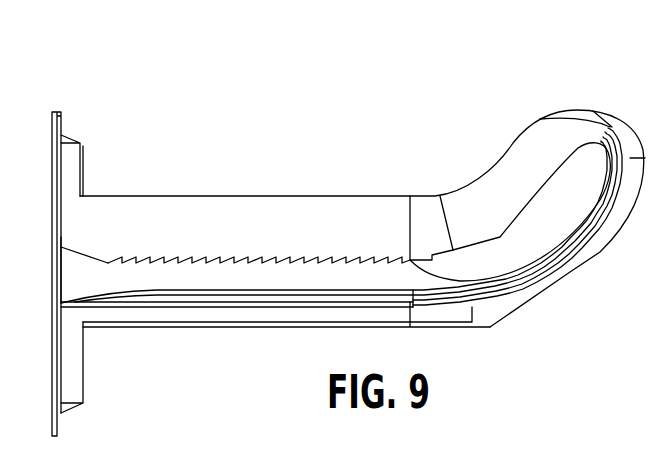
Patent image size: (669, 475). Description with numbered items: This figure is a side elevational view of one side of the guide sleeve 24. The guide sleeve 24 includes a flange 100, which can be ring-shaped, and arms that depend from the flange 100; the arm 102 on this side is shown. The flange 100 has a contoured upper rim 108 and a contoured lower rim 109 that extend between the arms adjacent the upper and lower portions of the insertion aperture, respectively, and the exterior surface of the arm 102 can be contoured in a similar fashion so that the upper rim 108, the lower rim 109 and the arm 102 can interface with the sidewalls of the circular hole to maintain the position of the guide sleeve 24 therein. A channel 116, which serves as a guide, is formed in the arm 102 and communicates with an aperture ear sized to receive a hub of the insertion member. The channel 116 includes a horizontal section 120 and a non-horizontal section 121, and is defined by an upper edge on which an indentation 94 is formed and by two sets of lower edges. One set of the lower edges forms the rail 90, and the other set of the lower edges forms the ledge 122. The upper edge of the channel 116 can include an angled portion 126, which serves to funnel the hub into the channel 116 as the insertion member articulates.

The flange 100 is at (52, 117).
The contoured upper rim 108 is at (72, 167).
The contoured lower rim 109 is at (73, 365).
The guide sleeve 24 is at (250, 168).
The rail 90 is at (323, 293).
The arm 102 is at (500, 190).
The non-horizontal section 121 is at (563, 205).
The ledge 122 is at (173, 302).
The horizontal section 120 is at (281, 270).
The channel 116 is at (433, 292).
The angled portion 126 is at (83, 255).
The indentation 94 is at (397, 279).